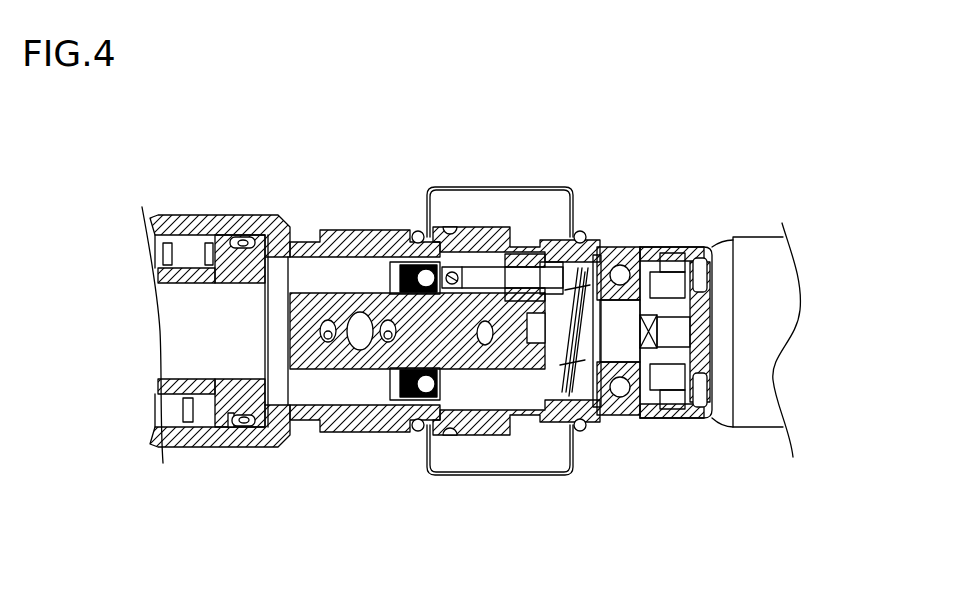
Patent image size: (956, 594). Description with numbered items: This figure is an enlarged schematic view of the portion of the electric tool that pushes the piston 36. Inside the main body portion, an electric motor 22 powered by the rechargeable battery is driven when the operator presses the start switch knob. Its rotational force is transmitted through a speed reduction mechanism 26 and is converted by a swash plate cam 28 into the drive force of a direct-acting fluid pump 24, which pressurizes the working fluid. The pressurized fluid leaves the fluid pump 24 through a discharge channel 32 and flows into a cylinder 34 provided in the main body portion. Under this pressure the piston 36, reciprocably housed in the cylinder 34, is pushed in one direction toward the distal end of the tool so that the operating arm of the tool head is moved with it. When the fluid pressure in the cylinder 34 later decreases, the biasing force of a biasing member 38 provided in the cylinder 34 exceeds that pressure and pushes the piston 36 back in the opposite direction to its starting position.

The electric motor 22 is at (758, 247).
The fluid pump 24 is at (521, 263).
The speed reduction mechanism 26 is at (673, 277).
The swash plate cam 28 is at (580, 315).
The discharge channel 32 is at (335, 268).
The cylinder 34 is at (170, 227).
The piston 36 is at (255, 257).
The biasing member 38 is at (207, 243).